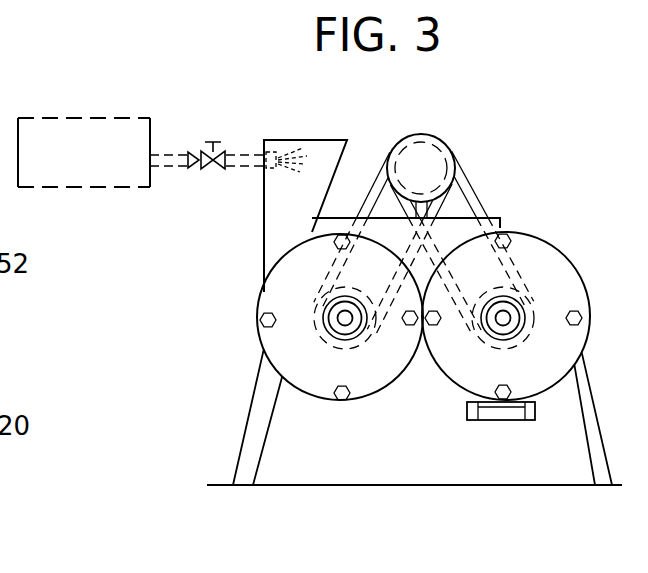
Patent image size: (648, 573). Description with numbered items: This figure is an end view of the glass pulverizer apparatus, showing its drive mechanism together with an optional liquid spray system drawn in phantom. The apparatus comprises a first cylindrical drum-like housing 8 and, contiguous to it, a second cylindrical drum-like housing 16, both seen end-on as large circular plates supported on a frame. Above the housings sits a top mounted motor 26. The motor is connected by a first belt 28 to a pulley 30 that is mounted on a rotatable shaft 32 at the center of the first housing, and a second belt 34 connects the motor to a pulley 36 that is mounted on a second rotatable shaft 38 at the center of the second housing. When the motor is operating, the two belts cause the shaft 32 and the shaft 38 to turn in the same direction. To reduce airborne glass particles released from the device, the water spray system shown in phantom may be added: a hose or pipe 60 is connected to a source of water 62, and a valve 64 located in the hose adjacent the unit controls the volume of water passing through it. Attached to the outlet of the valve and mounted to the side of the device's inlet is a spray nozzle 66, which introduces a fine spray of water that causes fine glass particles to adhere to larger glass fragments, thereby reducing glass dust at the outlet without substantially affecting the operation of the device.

The first cylindrical drum-like housing 8 is at (307, 397).
The second cylindrical drum-like housing 16 is at (563, 248).
The motor 26 is at (447, 142).
The first belt 28 is at (380, 198).
The pulley 30 is at (360, 343).
The rotatable shaft 32 is at (340, 322).
The second belt 34 is at (466, 196).
The pulley 36 is at (495, 347).
The second rotatable shaft 38 is at (507, 327).
The hose or pipe 60 is at (167, 153).
The source of water 62 is at (50, 117).
The valve 64 is at (224, 143).
The spray nozzle 66 is at (269, 145).